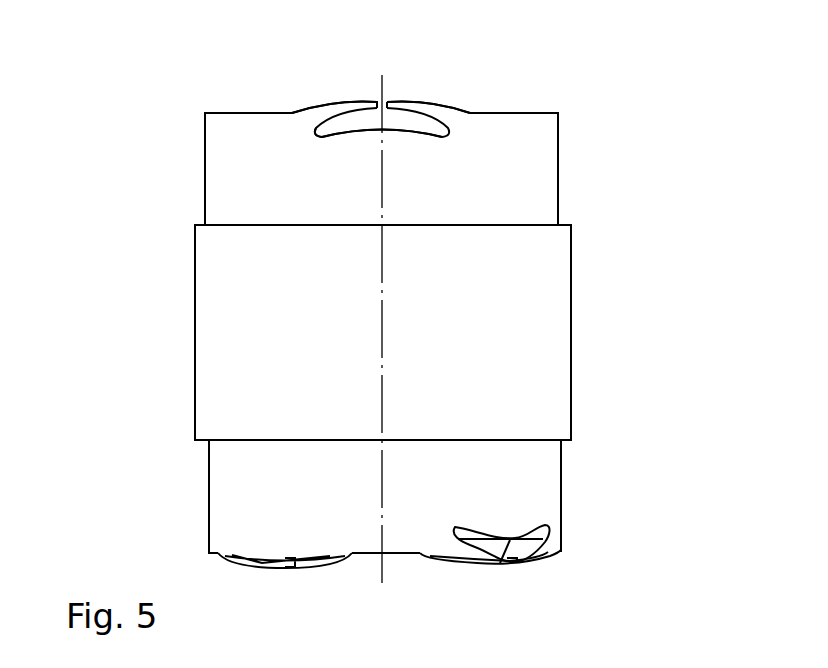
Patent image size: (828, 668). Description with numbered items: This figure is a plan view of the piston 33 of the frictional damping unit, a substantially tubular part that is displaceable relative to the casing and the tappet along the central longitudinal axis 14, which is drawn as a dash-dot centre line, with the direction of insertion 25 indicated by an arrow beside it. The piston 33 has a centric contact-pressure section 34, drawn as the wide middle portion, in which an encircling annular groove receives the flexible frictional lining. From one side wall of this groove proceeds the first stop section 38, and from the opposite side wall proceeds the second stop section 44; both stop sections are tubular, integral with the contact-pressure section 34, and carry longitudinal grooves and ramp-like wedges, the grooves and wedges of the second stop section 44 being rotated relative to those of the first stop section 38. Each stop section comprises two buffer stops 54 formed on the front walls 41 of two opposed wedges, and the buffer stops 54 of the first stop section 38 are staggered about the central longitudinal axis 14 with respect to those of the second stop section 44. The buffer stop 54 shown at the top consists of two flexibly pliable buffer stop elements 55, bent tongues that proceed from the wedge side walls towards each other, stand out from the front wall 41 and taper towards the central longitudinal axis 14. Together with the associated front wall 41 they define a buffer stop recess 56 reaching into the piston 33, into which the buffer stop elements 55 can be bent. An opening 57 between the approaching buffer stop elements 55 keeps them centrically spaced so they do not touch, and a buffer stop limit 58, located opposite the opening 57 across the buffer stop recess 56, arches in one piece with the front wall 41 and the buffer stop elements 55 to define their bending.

The central longitudinal axis 14 is at (382, 245).
The direction of insertion 25 is at (175, 414).
The piston 33 is at (175, 337).
The contact-pressure section 34 is at (545, 340).
The first stop section 38 is at (545, 485).
The front wall 41 is at (445, 133).
The second stop section 44 is at (542, 192).
The buffer stop 54 is at (412, 80).
The buffer stop element 55 is at (355, 100).
The buffer stop recess 56 is at (328, 124).
The opening 57 is at (381, 72).
The buffer stop limit 58 is at (372, 132).